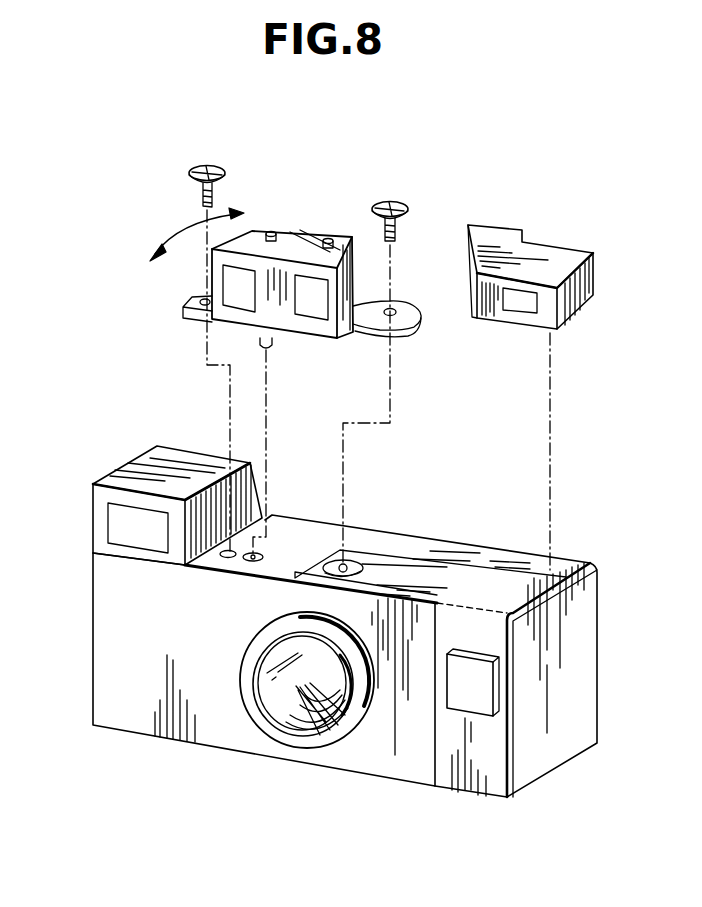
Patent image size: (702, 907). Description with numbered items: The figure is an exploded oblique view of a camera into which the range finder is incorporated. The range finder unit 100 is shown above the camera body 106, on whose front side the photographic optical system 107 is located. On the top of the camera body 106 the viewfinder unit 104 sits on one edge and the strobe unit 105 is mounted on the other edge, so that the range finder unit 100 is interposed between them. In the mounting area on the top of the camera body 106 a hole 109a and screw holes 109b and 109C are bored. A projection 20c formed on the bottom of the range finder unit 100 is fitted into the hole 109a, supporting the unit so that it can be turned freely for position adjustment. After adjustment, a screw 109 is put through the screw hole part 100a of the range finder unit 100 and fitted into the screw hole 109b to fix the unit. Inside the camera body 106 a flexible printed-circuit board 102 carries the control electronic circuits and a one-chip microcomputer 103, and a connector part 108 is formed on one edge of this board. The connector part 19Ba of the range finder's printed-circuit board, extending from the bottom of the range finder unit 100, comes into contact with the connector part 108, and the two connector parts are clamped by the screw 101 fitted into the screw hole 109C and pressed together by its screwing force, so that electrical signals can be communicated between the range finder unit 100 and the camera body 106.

The range finder unit 100 is at (300, 229).
The screw hole part 100a is at (196, 309).
The screw 101 is at (407, 206).
The printed-circuit board 102 is at (480, 585).
The one-chip microcomputer 103 is at (455, 685).
The viewfinder unit 104 is at (554, 265).
The strobe unit 105 is at (238, 507).
The camera body 106 is at (130, 692).
The photographic optical system 107 is at (285, 690).
The connector part 108 is at (356, 563).
The screw 109 is at (203, 197).
The hole 109a is at (250, 560).
The screw hole 109b is at (222, 556).
The screw hole 109C is at (346, 566).
The connector part 19Ba is at (416, 327).
The projection 20c is at (276, 346).